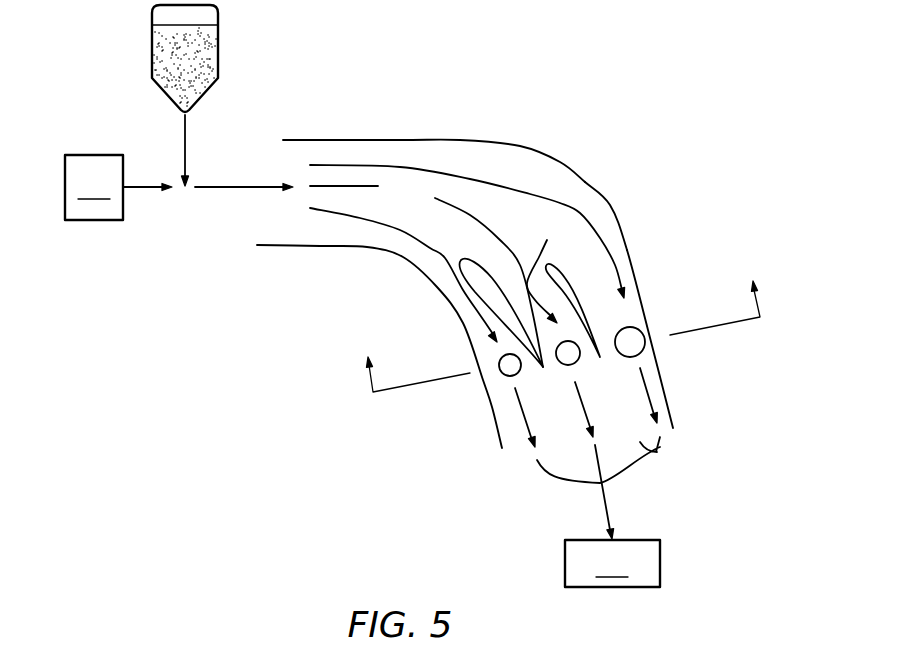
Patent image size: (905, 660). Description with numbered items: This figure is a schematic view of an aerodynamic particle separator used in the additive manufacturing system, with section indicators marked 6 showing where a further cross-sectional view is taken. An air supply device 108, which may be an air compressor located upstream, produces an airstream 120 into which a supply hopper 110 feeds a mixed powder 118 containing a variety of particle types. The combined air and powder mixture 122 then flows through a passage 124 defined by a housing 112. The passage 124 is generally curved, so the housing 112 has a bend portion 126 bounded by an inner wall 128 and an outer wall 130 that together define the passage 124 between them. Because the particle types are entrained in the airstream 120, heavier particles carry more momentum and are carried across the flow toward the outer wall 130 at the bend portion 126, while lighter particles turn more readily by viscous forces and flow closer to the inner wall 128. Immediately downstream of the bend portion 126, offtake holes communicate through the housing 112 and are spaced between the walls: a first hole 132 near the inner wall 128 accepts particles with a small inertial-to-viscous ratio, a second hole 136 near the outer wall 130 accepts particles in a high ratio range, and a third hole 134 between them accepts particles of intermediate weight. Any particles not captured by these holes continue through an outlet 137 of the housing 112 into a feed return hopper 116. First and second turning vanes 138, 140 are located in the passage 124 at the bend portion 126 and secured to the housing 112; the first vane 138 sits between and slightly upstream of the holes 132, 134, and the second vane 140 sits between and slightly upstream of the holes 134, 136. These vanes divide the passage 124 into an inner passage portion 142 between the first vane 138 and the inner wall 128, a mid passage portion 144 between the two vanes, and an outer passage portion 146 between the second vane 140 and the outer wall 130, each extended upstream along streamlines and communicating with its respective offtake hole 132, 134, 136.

The air supply device 108 is at (94, 187).
The supply hopper 110 is at (218, 33).
The housing 112 is at (391, 127).
The feed return hopper 116 is at (612, 563).
The mixed powder 118 is at (150, 47).
The airstream 120 is at (142, 190).
The combined air and powder mixture 122 is at (227, 188).
The passage 124 is at (387, 203).
The bend portion 126 is at (580, 170).
The inner wall 128 is at (403, 257).
The outer wall 130 is at (610, 205).
The first offtake hole 132 is at (510, 377).
The third offtake hole 134 is at (577, 360).
The second offtake hole 136 is at (633, 348).
The outlet 137 is at (660, 447).
The first turning vane 138 is at (480, 292).
The second turning vane 140 is at (580, 278).
The inner passage portion 142 is at (472, 320).
The mid passage portion 144 is at (547, 268).
The outer passage portion 146 is at (642, 292).
The section line for FIG. 6 is at (559, 324).